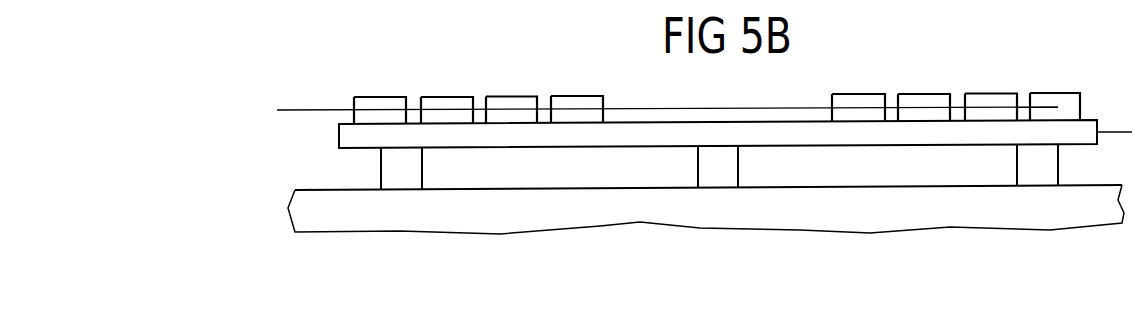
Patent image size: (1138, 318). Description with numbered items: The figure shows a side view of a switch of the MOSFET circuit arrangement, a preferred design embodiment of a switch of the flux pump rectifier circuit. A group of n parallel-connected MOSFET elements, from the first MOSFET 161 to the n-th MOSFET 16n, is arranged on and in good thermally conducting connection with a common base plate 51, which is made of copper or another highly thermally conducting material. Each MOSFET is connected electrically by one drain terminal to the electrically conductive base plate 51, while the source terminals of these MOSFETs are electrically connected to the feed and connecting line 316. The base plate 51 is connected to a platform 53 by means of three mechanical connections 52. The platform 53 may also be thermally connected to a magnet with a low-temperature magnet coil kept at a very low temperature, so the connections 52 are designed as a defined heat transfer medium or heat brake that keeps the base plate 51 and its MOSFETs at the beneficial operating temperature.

The feed and connecting line 316 is at (302, 108).
The MOSFET 161 is at (377, 95).
The MOSFET 16n is at (1056, 93).
The base plate 51 is at (1088, 119).
The mechanical connections 52 is at (422, 165).
The platform 53 is at (313, 195).